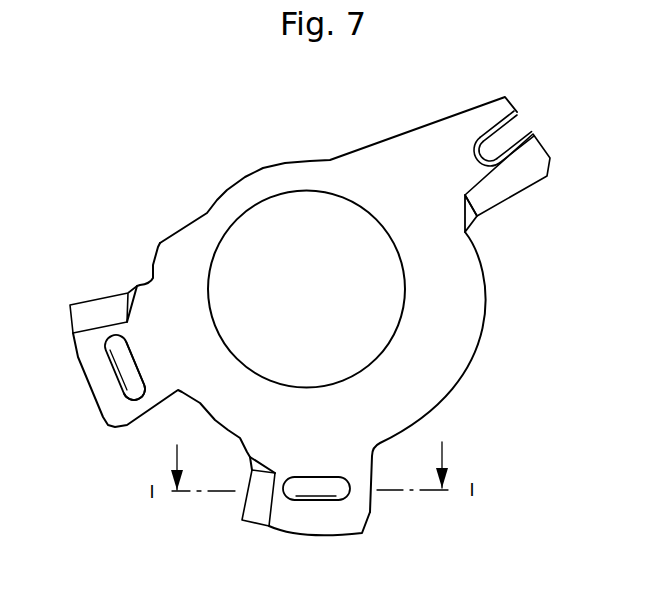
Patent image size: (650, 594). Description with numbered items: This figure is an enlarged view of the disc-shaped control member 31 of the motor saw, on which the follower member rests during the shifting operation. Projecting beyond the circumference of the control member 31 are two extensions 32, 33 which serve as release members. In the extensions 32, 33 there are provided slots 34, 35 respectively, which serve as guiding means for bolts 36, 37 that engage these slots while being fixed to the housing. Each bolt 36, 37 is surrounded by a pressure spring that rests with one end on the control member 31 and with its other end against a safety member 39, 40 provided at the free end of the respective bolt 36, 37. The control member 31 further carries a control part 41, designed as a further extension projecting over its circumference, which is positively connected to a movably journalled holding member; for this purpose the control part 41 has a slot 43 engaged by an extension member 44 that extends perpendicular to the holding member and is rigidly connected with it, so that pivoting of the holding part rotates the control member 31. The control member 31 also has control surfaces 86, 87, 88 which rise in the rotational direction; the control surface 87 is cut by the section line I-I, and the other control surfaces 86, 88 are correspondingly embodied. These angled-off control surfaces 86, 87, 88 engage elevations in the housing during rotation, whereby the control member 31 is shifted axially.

The control member 31 is at (265, 190).
The extension 32 is at (120, 417).
The extension 33 is at (363, 507).
The slot 34 is at (115, 347).
The slot 35 is at (360, 530).
The bolt 36 is at (137, 385).
The bolt 37 is at (317, 490).
The safety member 39 is at (128, 367).
The safety member 40 is at (295, 492).
The control part 41 is at (537, 170).
The slot 43 is at (517, 128).
The extension member 44 is at (488, 147).
The control surface 86 is at (93, 318).
The control surface 87 is at (260, 517).
The control surface 88 is at (508, 192).